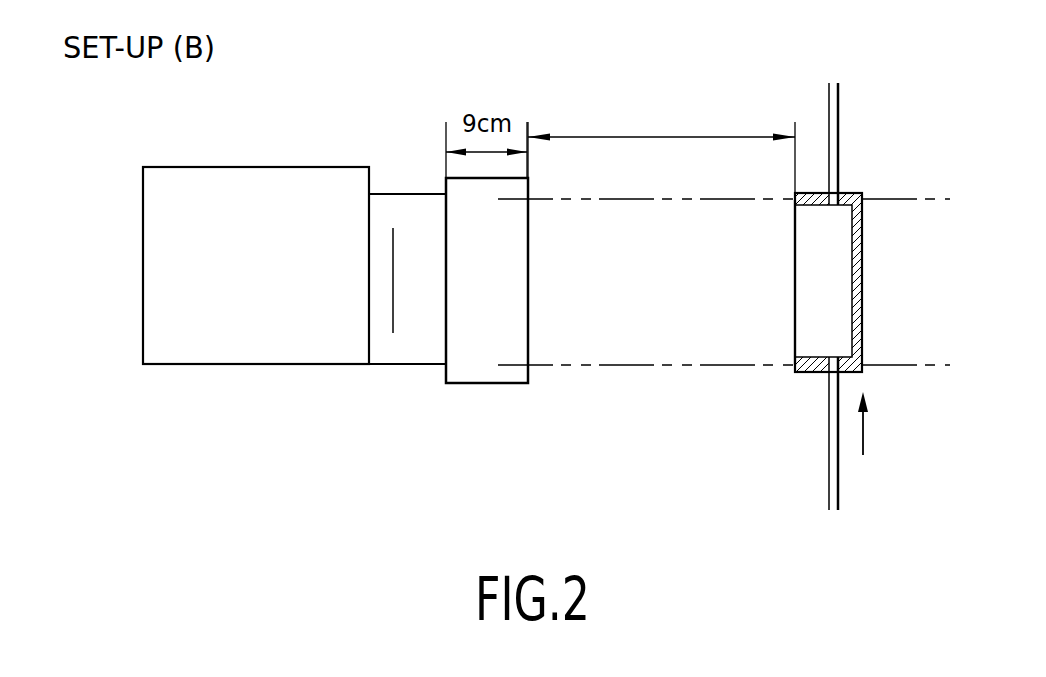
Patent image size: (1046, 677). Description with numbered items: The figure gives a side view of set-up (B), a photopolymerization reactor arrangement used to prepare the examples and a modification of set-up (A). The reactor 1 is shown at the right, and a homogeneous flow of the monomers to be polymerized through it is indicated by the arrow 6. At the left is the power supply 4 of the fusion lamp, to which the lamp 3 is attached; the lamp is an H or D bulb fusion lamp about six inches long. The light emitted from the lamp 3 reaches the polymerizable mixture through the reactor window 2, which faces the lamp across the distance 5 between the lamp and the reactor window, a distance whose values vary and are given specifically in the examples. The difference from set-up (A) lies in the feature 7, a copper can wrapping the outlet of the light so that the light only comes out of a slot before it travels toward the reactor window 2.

The reactor 1 is at (849, 282).
The reactor window 2 is at (795, 292).
The lamp 3 is at (393, 313).
The power supply 4 is at (262, 273).
The distance 5 is at (661, 145).
The flow of the monomers 6 is at (882, 423).
The copper can 7 is at (488, 388).